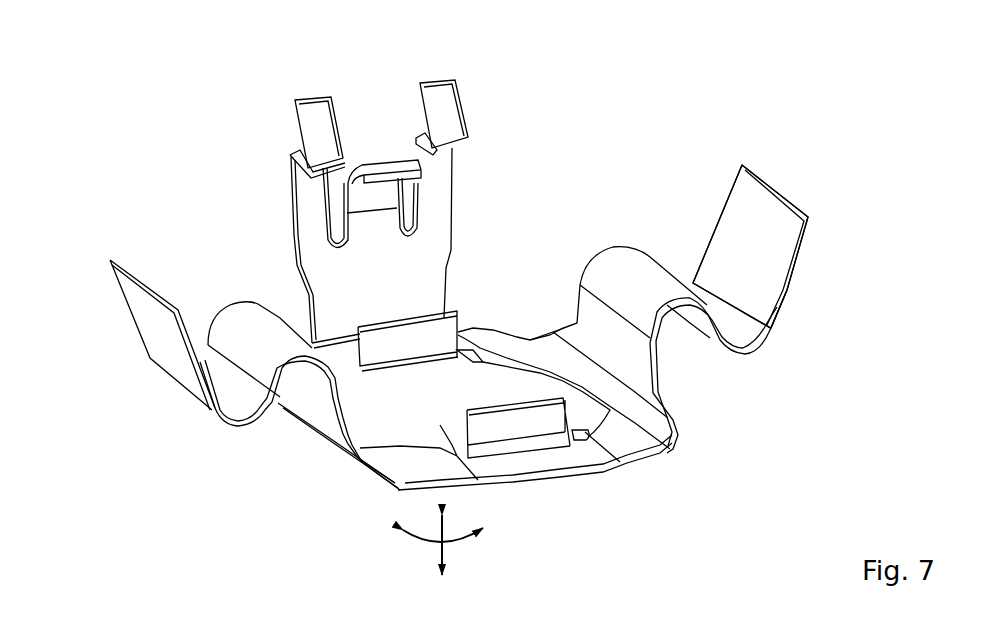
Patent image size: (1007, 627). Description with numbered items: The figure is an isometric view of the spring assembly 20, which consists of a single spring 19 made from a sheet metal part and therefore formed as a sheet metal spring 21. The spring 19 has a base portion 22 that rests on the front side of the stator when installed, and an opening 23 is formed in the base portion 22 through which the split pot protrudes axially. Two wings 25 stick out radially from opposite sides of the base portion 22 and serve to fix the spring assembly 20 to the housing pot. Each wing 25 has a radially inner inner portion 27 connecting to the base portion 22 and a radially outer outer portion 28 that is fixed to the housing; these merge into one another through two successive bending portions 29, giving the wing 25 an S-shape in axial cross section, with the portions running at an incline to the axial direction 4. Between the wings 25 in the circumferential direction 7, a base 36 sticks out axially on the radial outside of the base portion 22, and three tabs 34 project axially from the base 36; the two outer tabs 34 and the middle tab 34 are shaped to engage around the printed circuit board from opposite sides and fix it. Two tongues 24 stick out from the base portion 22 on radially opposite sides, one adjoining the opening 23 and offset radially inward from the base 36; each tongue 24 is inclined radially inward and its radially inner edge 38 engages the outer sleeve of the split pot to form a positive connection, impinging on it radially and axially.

The axial direction 4 is at (443, 558).
The circumferential direction 7 is at (410, 543).
The spring 19 is at (820, 180).
The spring assembly 20 is at (820, 180).
The sheet metal spring 21 is at (798, 172).
The base portion 22 is at (431, 478).
The opening 23 is at (410, 407).
The tongue 24 is at (423, 348).
The wing 25 is at (148, 356).
The inner portion 27 is at (330, 430).
The outer portion 28 is at (140, 308).
The bending portion 29 is at (240, 318).
The tab 34 is at (313, 105).
The base 36 is at (393, 292).
The radially inner edge 38 is at (457, 325).